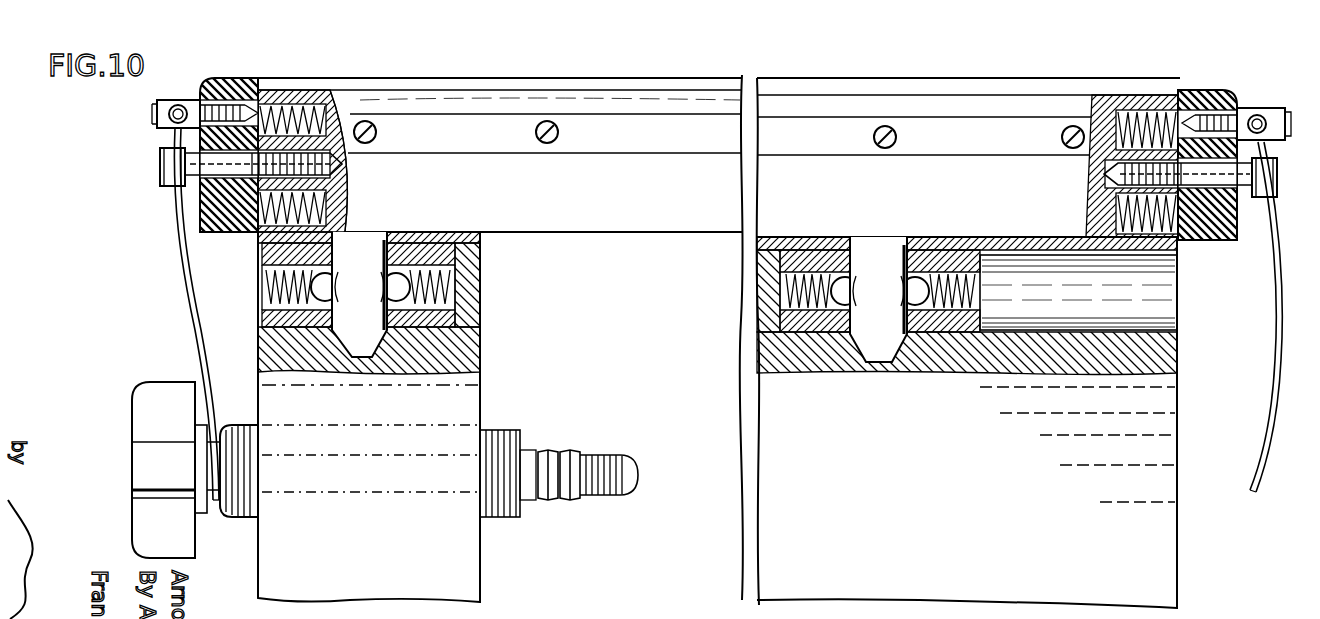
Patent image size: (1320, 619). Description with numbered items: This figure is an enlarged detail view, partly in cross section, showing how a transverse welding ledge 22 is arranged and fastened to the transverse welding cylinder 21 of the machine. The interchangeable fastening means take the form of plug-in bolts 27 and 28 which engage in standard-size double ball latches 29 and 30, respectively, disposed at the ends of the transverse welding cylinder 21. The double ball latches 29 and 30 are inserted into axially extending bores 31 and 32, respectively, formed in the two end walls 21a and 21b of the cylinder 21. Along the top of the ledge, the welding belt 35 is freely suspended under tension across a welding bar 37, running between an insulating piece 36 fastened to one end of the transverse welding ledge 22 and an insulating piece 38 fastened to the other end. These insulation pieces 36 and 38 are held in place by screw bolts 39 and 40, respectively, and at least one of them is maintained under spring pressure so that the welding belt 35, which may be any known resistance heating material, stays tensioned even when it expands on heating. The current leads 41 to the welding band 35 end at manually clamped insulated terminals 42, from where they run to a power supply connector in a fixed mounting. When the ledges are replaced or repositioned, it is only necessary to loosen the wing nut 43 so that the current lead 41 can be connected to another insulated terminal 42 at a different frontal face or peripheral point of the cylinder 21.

The transverse welding cylinder 21 is at (1178, 470).
The end wall of the transverse welding cylinder 21a is at (258, 572).
The end wall of the transverse welding cylinder 21b is at (1176, 598).
The transverse welding ledge 22 is at (545, 78).
The plug-in bolt 27 is at (352, 346).
The plug-in bolt 28 is at (878, 352).
The double ball latch 29 is at (410, 325).
The double ball latch 30 is at (942, 328).
The axially extending bore 31 is at (445, 325).
The axially extending bore 32 is at (1072, 332).
The welding belt 35 is at (812, 80).
The insulating piece 36 is at (220, 95).
The welding bar 37 is at (420, 100).
The insulating piece 38 is at (1200, 92).
The screw bolt 39 is at (165, 166).
The screw bolt 40 is at (1196, 188).
The current lead 41 is at (178, 242).
The insulated terminal 42 is at (215, 506).
The wing nut 43 is at (148, 416).